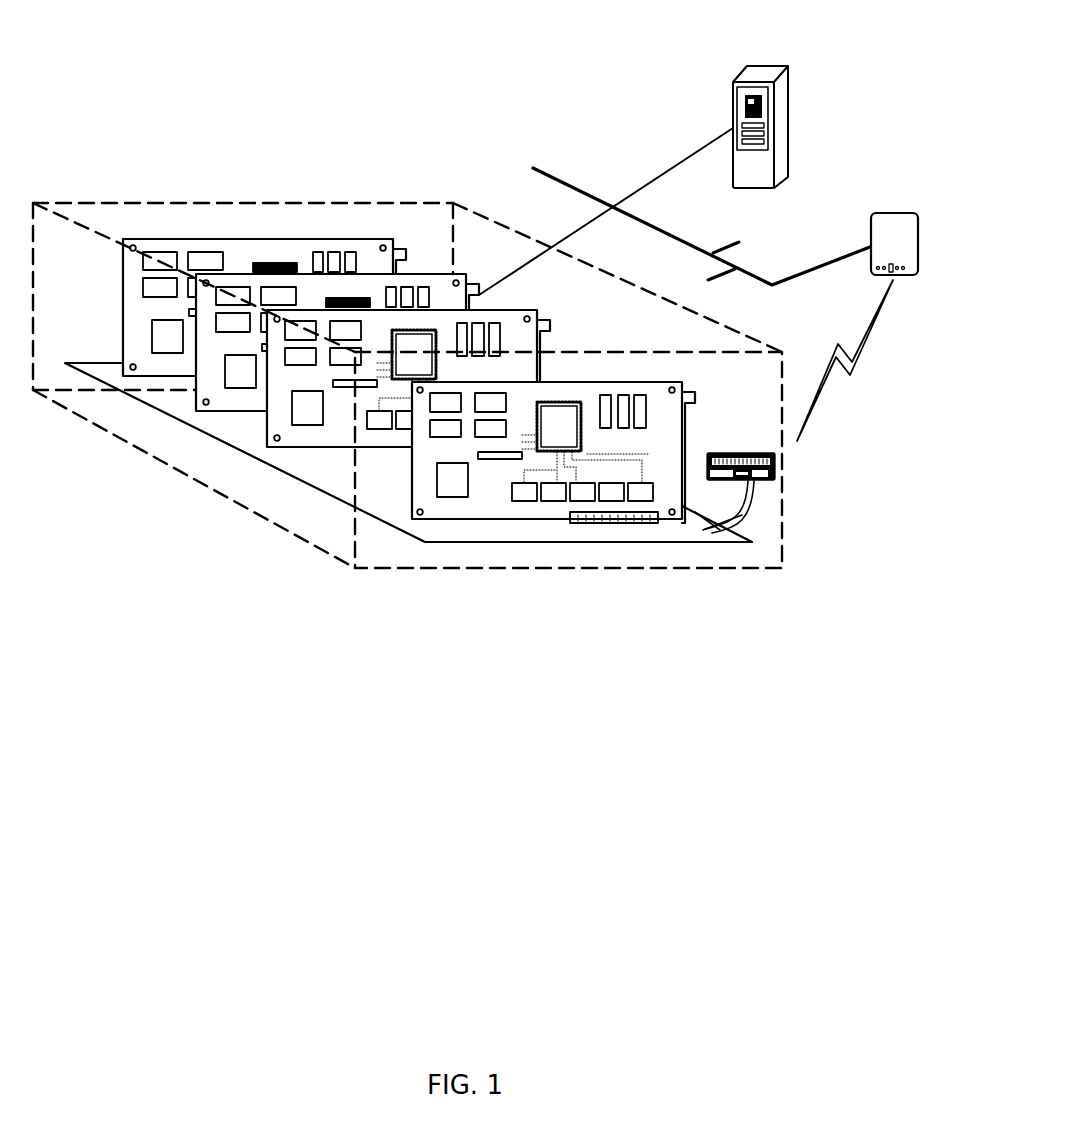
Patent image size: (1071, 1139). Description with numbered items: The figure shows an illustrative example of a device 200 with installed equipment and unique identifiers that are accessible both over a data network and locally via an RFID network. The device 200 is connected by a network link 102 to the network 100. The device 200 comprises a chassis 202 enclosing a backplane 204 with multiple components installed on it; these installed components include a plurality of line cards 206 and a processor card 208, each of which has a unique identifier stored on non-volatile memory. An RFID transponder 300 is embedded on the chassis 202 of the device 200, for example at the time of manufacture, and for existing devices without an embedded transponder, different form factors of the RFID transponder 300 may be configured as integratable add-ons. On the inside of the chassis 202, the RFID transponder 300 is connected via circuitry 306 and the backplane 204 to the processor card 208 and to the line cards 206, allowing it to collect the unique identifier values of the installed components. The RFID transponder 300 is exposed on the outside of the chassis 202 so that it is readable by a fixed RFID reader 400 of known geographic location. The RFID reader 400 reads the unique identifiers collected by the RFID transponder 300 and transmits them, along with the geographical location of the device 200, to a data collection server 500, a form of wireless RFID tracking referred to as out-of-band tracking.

The network 100 is at (557, 178).
The network link 102 is at (588, 257).
The device 200 is at (448, 363).
The chassis 202 is at (520, 575).
The backplane 204 is at (278, 472).
The line cards 206 is at (280, 420).
The processor card 208 is at (665, 498).
The RFID transponder 300 is at (775, 463).
The circuitry 306 is at (747, 512).
The RFID reader 400 is at (868, 230).
The data collection server 500 is at (761, 63).